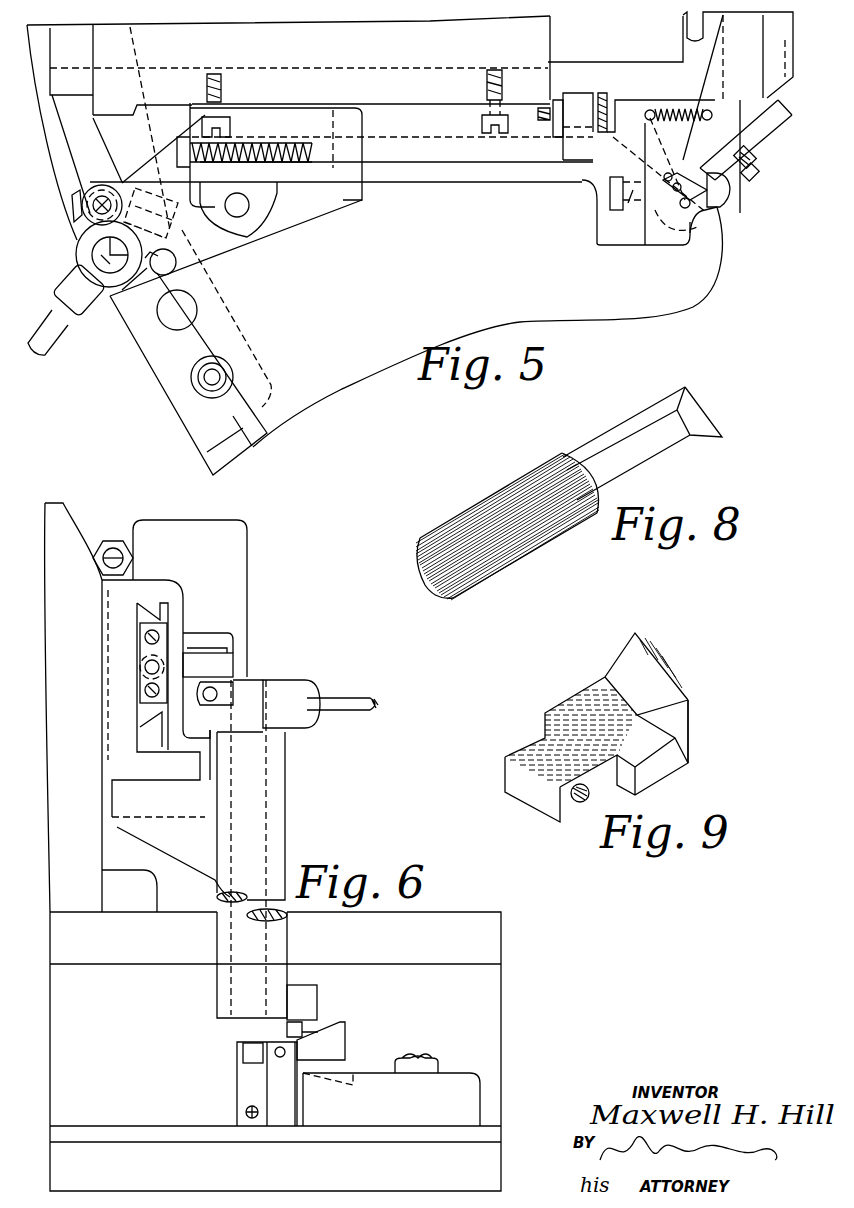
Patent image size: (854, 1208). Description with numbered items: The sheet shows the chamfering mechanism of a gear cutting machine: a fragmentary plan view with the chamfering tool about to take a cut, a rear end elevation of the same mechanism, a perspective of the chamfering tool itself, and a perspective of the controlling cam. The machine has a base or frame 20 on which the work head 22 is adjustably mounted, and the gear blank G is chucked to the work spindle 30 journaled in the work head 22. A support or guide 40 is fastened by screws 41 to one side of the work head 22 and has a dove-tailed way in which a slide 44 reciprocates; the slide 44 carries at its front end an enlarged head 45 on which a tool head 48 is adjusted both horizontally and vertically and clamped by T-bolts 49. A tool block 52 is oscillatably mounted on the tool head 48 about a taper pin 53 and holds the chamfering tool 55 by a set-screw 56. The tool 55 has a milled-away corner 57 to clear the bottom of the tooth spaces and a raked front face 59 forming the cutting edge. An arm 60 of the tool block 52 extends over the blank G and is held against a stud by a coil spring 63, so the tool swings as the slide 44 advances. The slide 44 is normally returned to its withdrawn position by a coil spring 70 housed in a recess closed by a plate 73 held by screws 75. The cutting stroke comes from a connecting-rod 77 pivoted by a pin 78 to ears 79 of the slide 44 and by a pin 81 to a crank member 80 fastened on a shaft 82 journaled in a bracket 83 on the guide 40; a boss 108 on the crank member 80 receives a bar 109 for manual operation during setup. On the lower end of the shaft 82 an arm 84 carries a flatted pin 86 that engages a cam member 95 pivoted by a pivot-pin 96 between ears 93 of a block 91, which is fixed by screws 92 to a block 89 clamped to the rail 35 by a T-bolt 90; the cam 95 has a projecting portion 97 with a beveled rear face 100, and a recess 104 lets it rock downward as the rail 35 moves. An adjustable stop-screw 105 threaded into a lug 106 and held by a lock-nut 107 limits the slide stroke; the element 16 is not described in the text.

In FIG. 5, the stop 16 is at (610, 205).
In FIG. 5, the base or frame 20 is at (374, 231).
In FIG. 6, the work head 22 is at (63, 515).
In FIG. 5, the work spindle 30 is at (366, 58).
In FIG. 6, the rail 35 is at (497, 1152).
In FIG. 5, the support or guide 40 is at (397, 122).
In FIG. 6, the support or guide 40 is at (117, 728).
In FIG. 5, the screws 41 is at (503, 86).
In FIG. 5, the slide 44 is at (495, 175).
In FIG. 6, the slide 44 is at (173, 600).
In FIG. 5, the enlarged head 45 is at (627, 240).
In FIG. 6, the enlarged head 45 is at (238, 572).
In FIG. 5, the tool head 48 is at (673, 242).
In FIG. 5, the T-bolts 49 is at (643, 193).
In FIG. 5, the tool block 52 is at (758, 150).
In FIG. 8, the tool block 52 is at (712, 412).
In FIG. 5, the taper pin 53 is at (710, 208).
In FIG. 5, the chamfering tool 55 is at (765, 124).
In FIG. 8, the chamfering tool 55 is at (556, 530).
In FIG. 5, the set-screw 56 is at (760, 170).
In FIG. 8, the milled-away corner 57 is at (687, 386).
In FIG. 8, the front face 59 is at (708, 438).
In FIG. 5, the arm 60 is at (703, 60).
In FIG. 5, the coil spring 63 is at (668, 110).
In FIG. 5, the coil spring 70 is at (263, 142).
In FIG. 6, the coil spring 70 is at (145, 670).
In FIG. 6, the plate 73 is at (150, 722).
In FIG. 6, the screws 75 is at (145, 692).
In FIG. 5, the connecting-rod 77 is at (133, 188).
In FIG. 6, the connecting-rod 77 is at (223, 660).
In FIG. 5, the pin 78 is at (247, 235).
In FIG. 5, the ears 79 is at (253, 213).
In FIG. 5, the crank member 80 is at (83, 227).
In FIG. 6, the crank member 80 is at (247, 690).
In FIG. 5, the pin 81 is at (75, 203).
In FIG. 5, the shaft 82 is at (113, 267).
In FIG. 6, the shaft 82 is at (255, 842).
In FIG. 5, the bracket 83 is at (328, 208).
In FIG. 6, the bracket 83 is at (195, 857).
In FIG. 5, the arm 84 is at (120, 303).
In FIG. 6, the arm 84 is at (303, 992).
In FIG. 5, the pin 86 is at (143, 340).
In FIG. 6, the pin 86 is at (303, 1030).
In FIG. 5, the block 89 is at (173, 372).
In FIG. 6, the block 89 is at (455, 1080).
In FIG. 5, the T-bolt 90 is at (207, 392).
In FIG. 6, the T-bolt 90 is at (420, 1057).
In FIG. 6, the block 91 is at (243, 1082).
In FIG. 6, the screws 92 is at (245, 1112).
In FIG. 6, the ears 93 is at (263, 1041).
In FIG. 9, the cam member 95 is at (583, 695).
In FIG. 6, the cam member 95 is at (332, 1043).
In FIG. 6, the pivot-pin 96 is at (280, 1057).
In FIG. 9, the projecting portion 97 is at (687, 715).
In FIG. 9, the beveled rear face 100 is at (637, 665).
In FIG. 6, the recess 104 is at (350, 1073).
In FIG. 5, the adjustable stop-screw 105 is at (609, 96).
In FIG. 5, the lug 106 is at (577, 100).
In FIG. 6, the lug 106 is at (130, 518).
In FIG. 5, the lock-nut 107 is at (557, 122).
In FIG. 6, the lock-nut 107 is at (127, 555).
In FIG. 5, the boss 108 is at (60, 283).
In FIG. 6, the boss 108 is at (288, 690).
In FIG. 5, the bar 109 is at (46, 345).
In FIG. 6, the bar 109 is at (348, 700).
In FIG. 5, the gear blank G is at (785, 89).